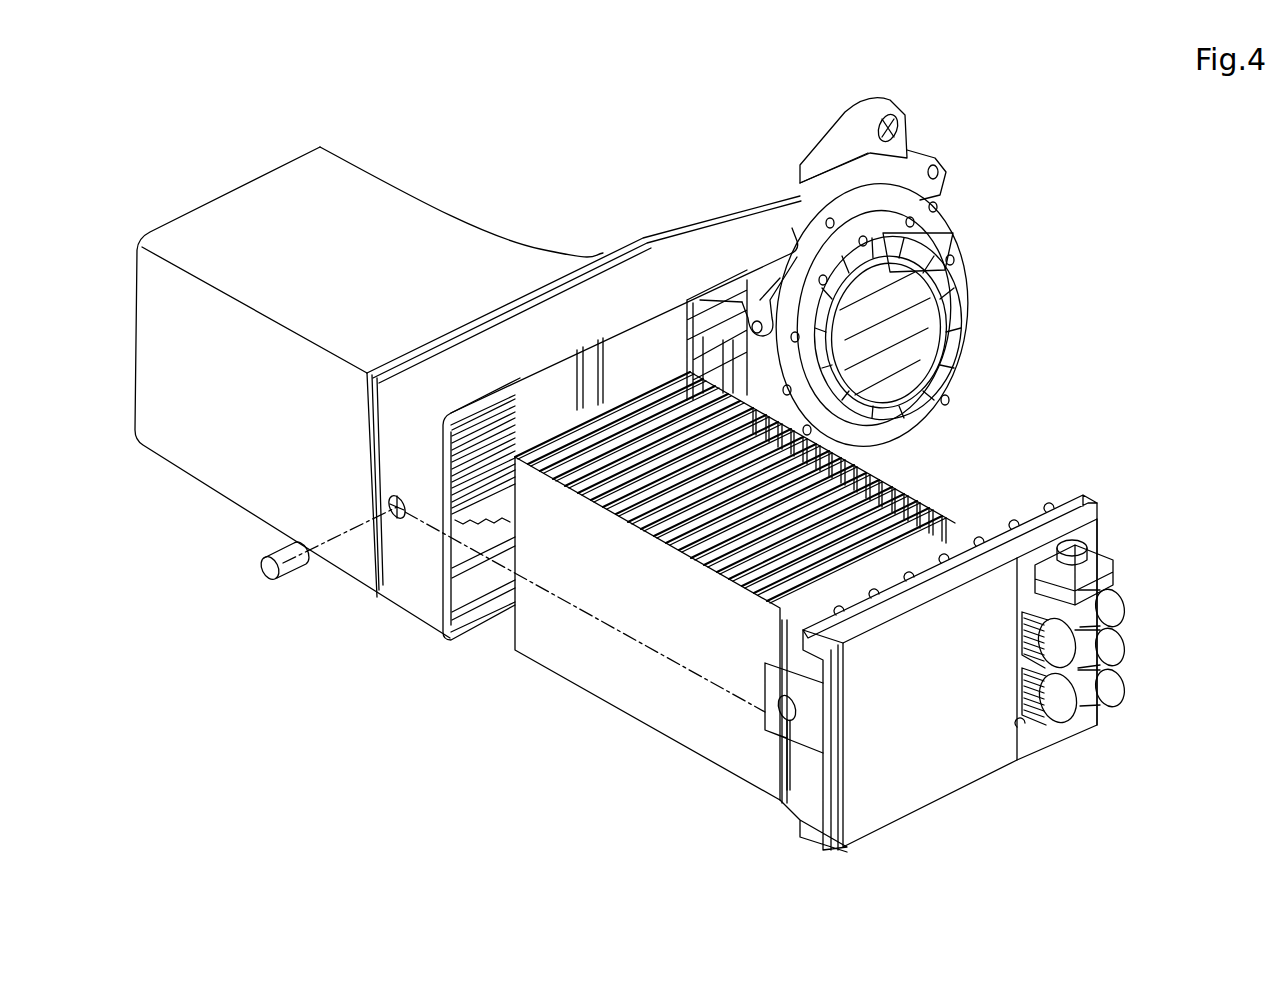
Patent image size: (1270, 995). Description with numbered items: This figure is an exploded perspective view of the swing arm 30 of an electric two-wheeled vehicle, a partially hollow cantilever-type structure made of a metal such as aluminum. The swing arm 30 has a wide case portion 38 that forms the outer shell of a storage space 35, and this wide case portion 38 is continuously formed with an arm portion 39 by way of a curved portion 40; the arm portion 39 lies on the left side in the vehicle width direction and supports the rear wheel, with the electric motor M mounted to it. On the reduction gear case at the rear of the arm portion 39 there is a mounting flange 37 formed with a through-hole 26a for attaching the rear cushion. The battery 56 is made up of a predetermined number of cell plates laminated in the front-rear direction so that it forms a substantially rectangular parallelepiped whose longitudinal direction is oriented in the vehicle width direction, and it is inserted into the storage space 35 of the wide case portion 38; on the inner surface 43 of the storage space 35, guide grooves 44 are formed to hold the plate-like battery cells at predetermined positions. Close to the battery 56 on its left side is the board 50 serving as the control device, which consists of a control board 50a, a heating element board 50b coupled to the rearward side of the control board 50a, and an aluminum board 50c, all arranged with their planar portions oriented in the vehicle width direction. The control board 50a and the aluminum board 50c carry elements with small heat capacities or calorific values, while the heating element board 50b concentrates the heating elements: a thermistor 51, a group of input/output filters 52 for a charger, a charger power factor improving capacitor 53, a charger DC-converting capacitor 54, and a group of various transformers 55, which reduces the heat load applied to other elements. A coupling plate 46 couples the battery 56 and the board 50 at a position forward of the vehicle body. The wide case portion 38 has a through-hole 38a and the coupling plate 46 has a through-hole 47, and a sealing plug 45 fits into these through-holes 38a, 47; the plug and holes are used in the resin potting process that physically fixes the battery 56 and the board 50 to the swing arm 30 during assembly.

The swing arm 30 is at (682, 150).
The storage space 35 is at (372, 192).
The mounting flange 37 is at (870, 125).
The through-hole 26a is at (892, 120).
The arm portion 39 is at (745, 226).
The curved portion 40 is at (597, 250).
The electric motor M is at (920, 330).
The wide case portion 38 is at (396, 618).
The through-hole 38a is at (390, 518).
The sealing plug 45 is at (265, 570).
The guide grooves 44 is at (460, 538).
The inner surface 43 is at (472, 618).
The battery 56 is at (965, 498).
The board 50 is at (1001, 657).
The control board 50a is at (900, 800).
The heating element board 50b is at (1080, 703).
The aluminum board 50c is at (973, 550).
The thermistor 51 is at (1072, 540).
The group of input/output filters 52 is at (1133, 588).
The charger power factor improving capacitor 53 is at (1126, 628).
The charger DC-converting capacitor 54 is at (1052, 710).
The group of various transformers 55 is at (1130, 658).
The coupling plate 46 is at (770, 727).
The through-hole 47 is at (792, 722).